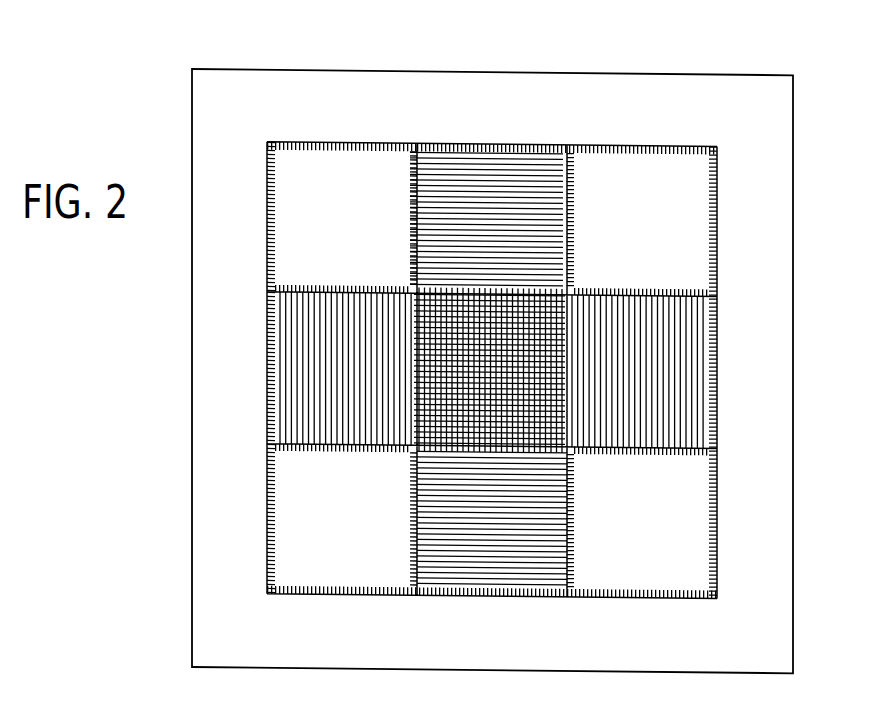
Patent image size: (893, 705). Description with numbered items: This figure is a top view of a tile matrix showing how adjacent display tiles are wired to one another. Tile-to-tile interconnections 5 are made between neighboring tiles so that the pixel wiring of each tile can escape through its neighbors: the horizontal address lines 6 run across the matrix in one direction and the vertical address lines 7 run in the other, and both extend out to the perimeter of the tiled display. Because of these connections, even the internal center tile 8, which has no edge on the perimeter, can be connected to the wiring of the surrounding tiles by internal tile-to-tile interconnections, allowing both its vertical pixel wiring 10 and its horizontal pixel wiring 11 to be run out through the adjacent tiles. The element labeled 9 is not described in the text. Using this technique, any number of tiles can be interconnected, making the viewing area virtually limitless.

The tile-to-tile interconnections 5 is at (416, 202).
The horizontal address lines 6 is at (538, 163).
The vertical address lines 7 is at (303, 357).
The internal center tile 8 is at (567, 339).
The fourth patterned region with horizontal orientation 9 is at (497, 452).
The vertical pixel wiring 10 is at (553, 368).
The horizontal pixel wiring 11 is at (517, 393).